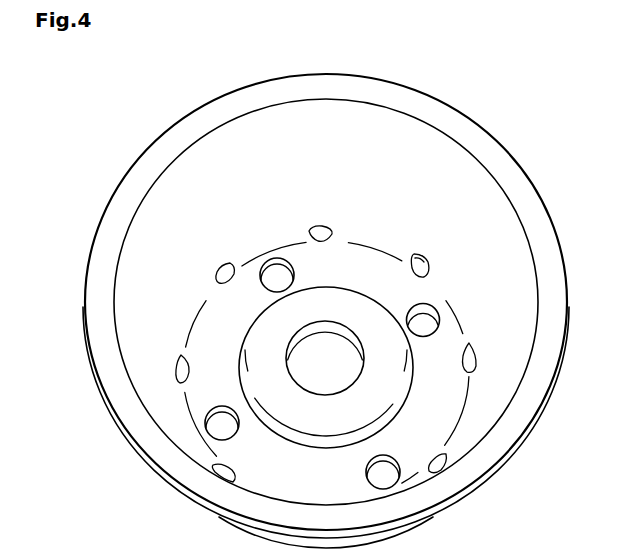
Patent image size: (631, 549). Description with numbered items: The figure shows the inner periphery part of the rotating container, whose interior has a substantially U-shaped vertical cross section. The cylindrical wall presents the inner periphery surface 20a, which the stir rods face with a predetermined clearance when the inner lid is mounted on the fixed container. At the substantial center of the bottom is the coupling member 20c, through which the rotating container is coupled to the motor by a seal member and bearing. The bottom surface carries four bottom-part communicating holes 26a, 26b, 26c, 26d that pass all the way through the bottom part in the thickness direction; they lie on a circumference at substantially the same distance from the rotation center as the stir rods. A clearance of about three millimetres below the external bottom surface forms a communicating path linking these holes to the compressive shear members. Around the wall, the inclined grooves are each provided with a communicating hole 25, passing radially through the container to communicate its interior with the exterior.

The inner periphery surface 20a is at (370, 148).
The coupling member 20c is at (349, 311).
The communicating hole 25 is at (417, 262).
The bottom-part communicating hole 26a is at (368, 471).
The bottom-part communicating hole 26b is at (220, 408).
The bottom-part communicating hole 26c is at (272, 264).
The bottom-part communicating hole 26d is at (434, 310).